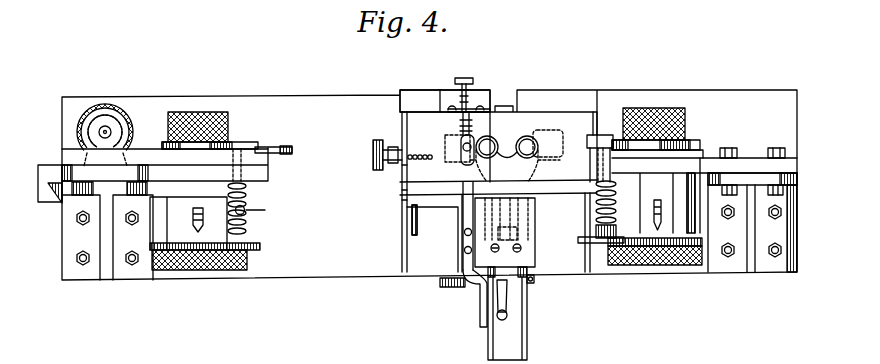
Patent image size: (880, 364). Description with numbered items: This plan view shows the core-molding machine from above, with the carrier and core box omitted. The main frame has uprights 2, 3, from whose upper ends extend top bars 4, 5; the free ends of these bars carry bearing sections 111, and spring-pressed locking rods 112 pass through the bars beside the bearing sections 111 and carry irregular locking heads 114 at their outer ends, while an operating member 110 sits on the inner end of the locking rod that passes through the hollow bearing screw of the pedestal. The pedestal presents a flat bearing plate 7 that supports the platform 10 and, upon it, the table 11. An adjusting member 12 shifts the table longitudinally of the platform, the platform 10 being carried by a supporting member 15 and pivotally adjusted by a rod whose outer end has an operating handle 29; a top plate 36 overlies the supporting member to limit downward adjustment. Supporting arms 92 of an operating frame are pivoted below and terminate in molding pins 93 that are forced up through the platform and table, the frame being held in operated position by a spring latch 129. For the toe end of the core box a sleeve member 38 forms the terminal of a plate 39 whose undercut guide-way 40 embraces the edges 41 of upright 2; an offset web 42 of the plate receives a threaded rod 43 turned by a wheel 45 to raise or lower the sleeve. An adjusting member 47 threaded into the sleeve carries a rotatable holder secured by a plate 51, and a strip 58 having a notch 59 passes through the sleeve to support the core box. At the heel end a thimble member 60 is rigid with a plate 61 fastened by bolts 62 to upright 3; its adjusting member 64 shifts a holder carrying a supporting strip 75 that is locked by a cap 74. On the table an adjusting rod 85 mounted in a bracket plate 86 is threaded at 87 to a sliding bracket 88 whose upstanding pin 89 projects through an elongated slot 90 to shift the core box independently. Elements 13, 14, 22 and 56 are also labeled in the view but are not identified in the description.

The upright 2 is at (88, 188).
The upright 3 is at (790, 183).
The top bar 4 is at (142, 178).
The top bar 5 is at (703, 165).
The bearing plate 7 is at (405, 200).
The platform 10 is at (407, 100).
The table 11 is at (437, 108).
The adjusting member 12 is at (400, 149).
The threaded shaft 13 is at (380, 170).
The bracket 14 is at (402, 172).
The supporting member 15 is at (402, 190).
The pin 22 is at (534, 281).
The operating handle 29 is at (508, 316).
The top plate 36 is at (532, 238).
The sleeve member 38 is at (186, 232).
The plate 39 is at (177, 192).
The guide-way 40 is at (58, 198).
The edges 41 is at (53, 165).
The offset web 42 is at (88, 120).
The threaded rod 43 is at (107, 126).
The operating wheel 45 is at (82, 122).
The adjusting member 47 is at (210, 270).
The plate 51 is at (240, 271).
The knurled nut 56 is at (210, 112).
The strip 58 is at (275, 147).
The notch 59 is at (286, 150).
The thimble member 60 is at (685, 263).
The plate 61 is at (787, 162).
The bolts 62 is at (772, 149).
The adjusting member 64 is at (657, 243).
The locking cap 74 is at (677, 108).
The supporting strip 75 is at (632, 95).
The adjusting rod 85 is at (462, 125).
The bracket plate 86 is at (452, 105).
The threaded portion 87 is at (460, 123).
The sliding bracket 88 is at (469, 145).
The upstanding pin 89 is at (466, 158).
The slot 90 is at (467, 165).
The supporting arms 92 is at (489, 348).
The molding pins 93 is at (523, 140).
The operating member 110 is at (448, 287).
The bearing sections 111 is at (183, 157).
The locking rods 112 is at (248, 191).
The locking heads 114 is at (240, 143).
The spring latch 129 is at (481, 317).